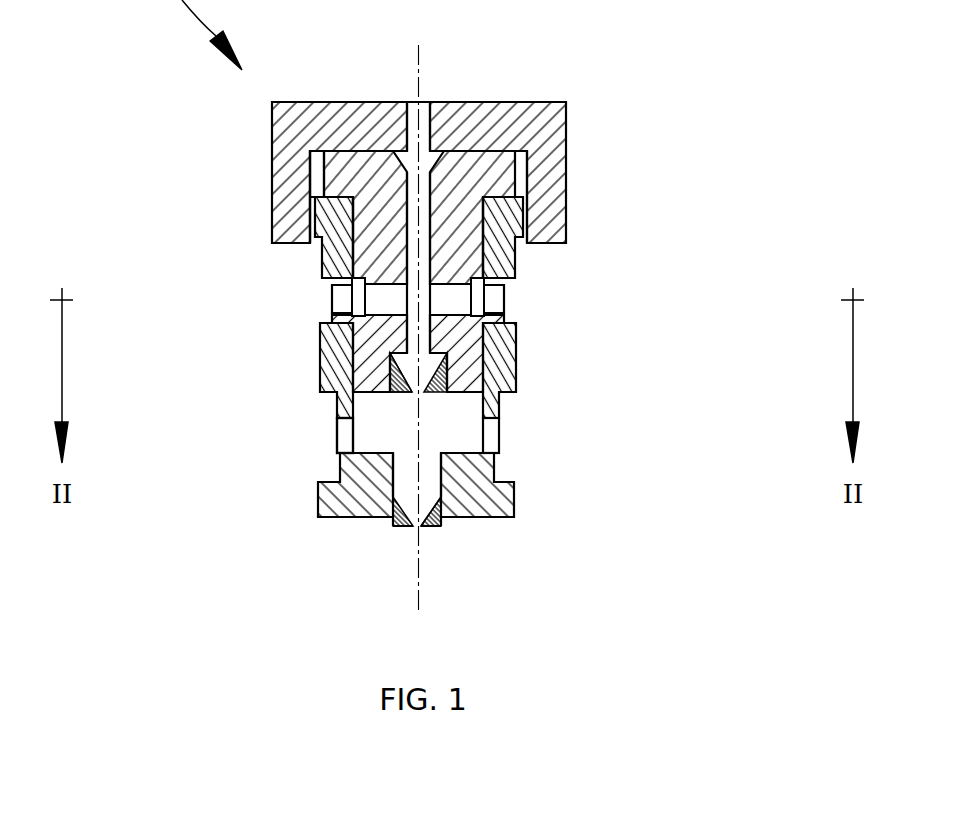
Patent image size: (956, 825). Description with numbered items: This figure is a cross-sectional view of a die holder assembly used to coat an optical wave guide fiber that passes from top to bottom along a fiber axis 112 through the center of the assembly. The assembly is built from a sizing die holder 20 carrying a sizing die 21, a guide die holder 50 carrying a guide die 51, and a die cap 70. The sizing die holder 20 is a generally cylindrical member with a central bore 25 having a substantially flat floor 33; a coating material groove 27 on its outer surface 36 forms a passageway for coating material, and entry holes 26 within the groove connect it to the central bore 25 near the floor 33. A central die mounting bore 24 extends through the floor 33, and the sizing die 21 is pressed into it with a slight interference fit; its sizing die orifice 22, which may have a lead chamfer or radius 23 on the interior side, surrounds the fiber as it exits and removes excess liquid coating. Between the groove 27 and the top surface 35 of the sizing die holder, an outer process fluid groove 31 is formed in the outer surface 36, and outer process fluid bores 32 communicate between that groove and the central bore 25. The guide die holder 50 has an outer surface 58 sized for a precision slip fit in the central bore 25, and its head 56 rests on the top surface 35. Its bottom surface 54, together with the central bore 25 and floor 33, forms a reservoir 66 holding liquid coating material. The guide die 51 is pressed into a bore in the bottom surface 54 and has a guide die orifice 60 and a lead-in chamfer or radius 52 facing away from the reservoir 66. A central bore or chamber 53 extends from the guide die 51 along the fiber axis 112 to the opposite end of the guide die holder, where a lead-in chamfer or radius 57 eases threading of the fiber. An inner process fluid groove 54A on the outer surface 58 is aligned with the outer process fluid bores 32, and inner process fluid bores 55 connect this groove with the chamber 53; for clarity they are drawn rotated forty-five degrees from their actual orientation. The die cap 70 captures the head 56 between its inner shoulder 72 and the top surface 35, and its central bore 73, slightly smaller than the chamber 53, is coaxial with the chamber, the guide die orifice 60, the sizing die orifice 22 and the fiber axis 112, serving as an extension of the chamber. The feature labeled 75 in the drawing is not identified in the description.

The sizing die holder 20 is at (318, 491).
The sizing die 21 is at (398, 527).
The sizing die orifice 22 is at (419, 527).
The lead chamfer or radius 23 is at (445, 506).
The central die mounting bore 24 is at (407, 468).
The central bore 25 is at (350, 428).
The entry holes 26 is at (348, 436).
The coating material groove 27 is at (326, 391).
The outer process fluid groove 31 is at (514, 315).
The outer process fluid bores 32 is at (500, 305).
The floor 33 is at (497, 452).
The top surface 35 is at (313, 188).
The outer surface 36 is at (517, 267).
The guide die holder 50 is at (522, 105).
The guide die 51 is at (395, 380).
The lead-in chamfer or radius 52 is at (395, 358).
The central bore or chamber 53 is at (413, 240).
The bottom surface 54 is at (495, 402).
The inner process fluid groove 54A is at (478, 297).
The inner process fluid bores 55 is at (455, 277).
The head 56 is at (515, 173).
The lead-in chamfer or radius 57 is at (432, 103).
The outer surface 58 is at (318, 222).
The guide die orifice 60 is at (448, 368).
The reservoir 66 is at (462, 443).
The die cap 70 is at (560, 141).
The inner shoulder 72 is at (315, 163).
The central bore 73 is at (413, 103).
The inlet 75 is at (423, 103).
The fiber axis 112 is at (418, 597).